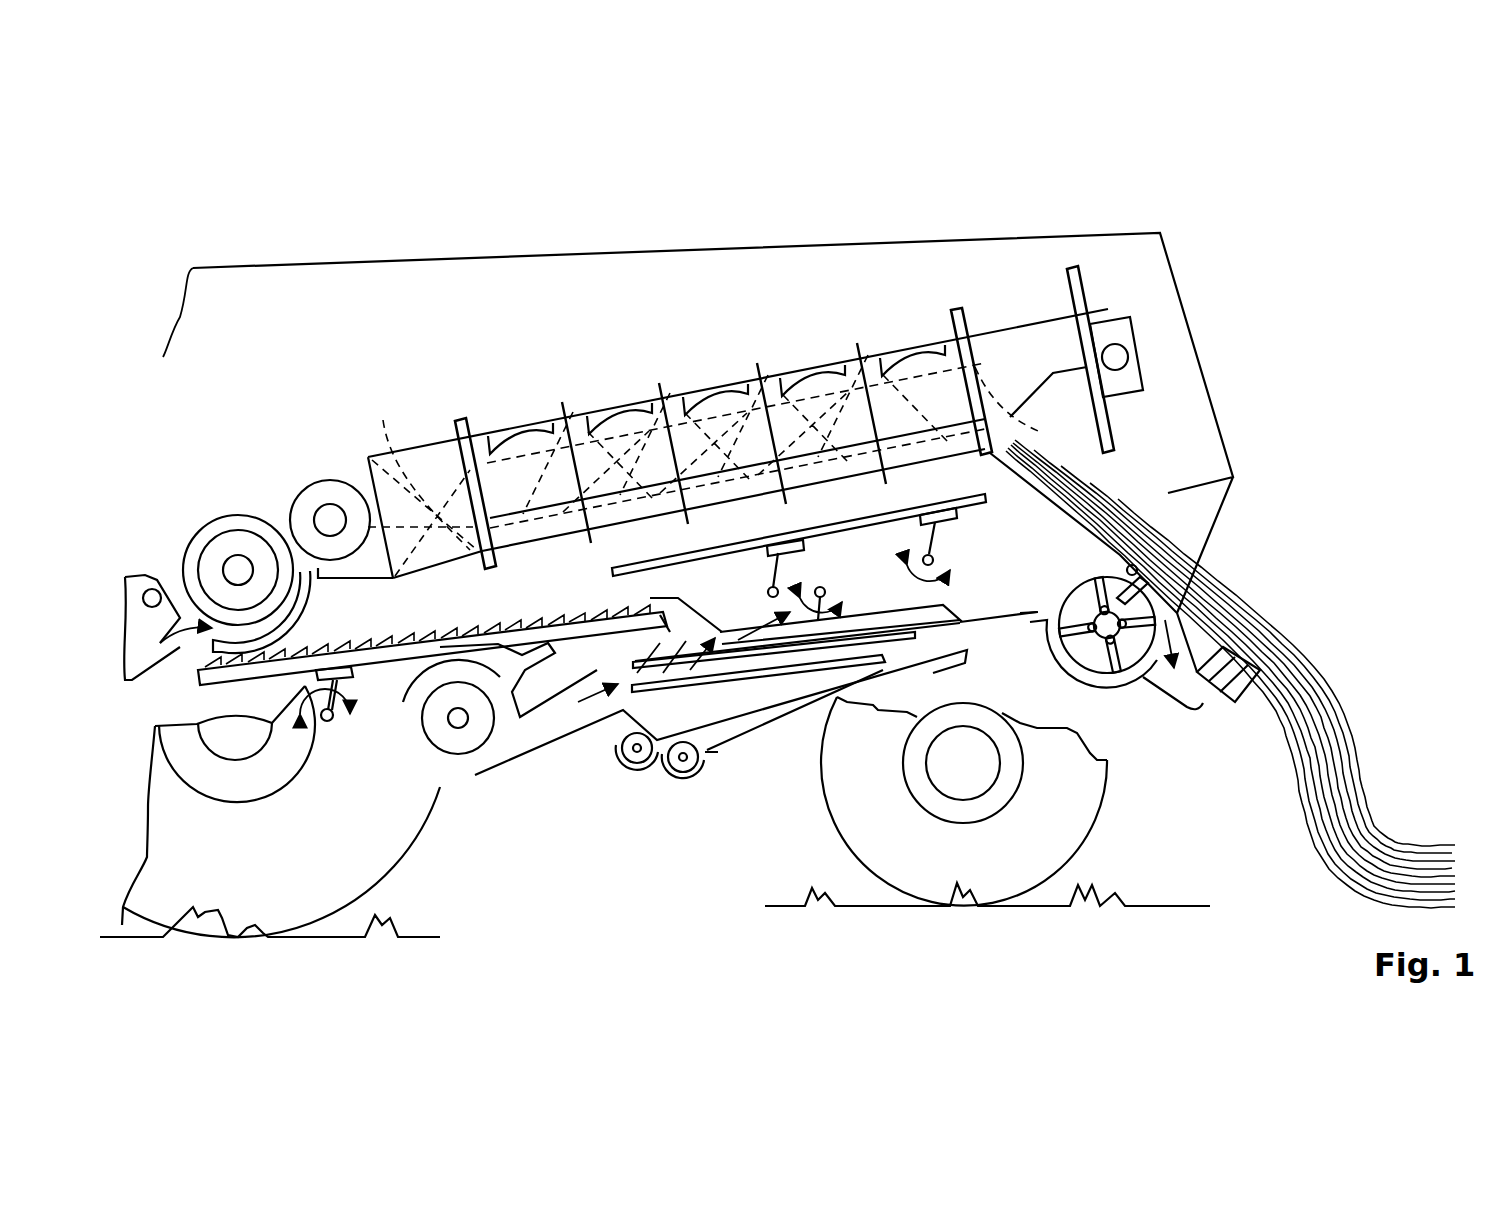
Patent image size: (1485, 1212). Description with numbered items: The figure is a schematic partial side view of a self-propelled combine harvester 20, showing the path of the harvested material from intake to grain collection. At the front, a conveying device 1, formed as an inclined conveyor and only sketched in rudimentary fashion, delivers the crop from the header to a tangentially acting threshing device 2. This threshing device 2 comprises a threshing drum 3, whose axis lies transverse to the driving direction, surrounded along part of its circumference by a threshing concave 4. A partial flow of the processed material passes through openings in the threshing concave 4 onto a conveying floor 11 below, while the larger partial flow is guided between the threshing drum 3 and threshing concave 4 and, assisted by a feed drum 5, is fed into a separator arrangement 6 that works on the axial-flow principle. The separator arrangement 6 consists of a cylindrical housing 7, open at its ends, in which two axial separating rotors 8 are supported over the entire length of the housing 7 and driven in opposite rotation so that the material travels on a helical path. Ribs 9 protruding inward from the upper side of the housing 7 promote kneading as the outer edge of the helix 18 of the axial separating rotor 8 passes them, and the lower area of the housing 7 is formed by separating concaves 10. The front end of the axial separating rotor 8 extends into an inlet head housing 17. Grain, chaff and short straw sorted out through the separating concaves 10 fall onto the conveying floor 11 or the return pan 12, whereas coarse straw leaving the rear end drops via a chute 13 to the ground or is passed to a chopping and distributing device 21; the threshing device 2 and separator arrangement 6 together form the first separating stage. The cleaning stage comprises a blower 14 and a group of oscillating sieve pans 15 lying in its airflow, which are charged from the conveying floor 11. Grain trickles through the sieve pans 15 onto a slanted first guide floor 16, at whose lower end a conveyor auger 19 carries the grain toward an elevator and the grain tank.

The conveying device 1 is at (140, 588).
The threshing device 2 is at (275, 447).
The threshing drum 3 is at (240, 540).
The threshing concave 4 is at (200, 653).
The feed drum 5 is at (330, 500).
The separator arrangement 6 is at (516, 376).
The housing 7 is at (865, 352).
The axial separating rotor 8 is at (720, 420).
The ribs 9 is at (620, 412).
The separating concaves 10 is at (823, 460).
The conveying floor 11 is at (410, 642).
The return pan 12 is at (868, 538).
The chute 13 is at (1077, 530).
The blower 14 is at (463, 745).
The sieve pans 15 is at (733, 660).
The first guide floor 16 is at (780, 700).
The inlet head housing 17 is at (428, 574).
The helix 18 is at (422, 478).
The conveyor auger 19 is at (620, 752).
The combine harvester 20 is at (978, 216).
The chopping and distributing device 21 is at (1145, 708).